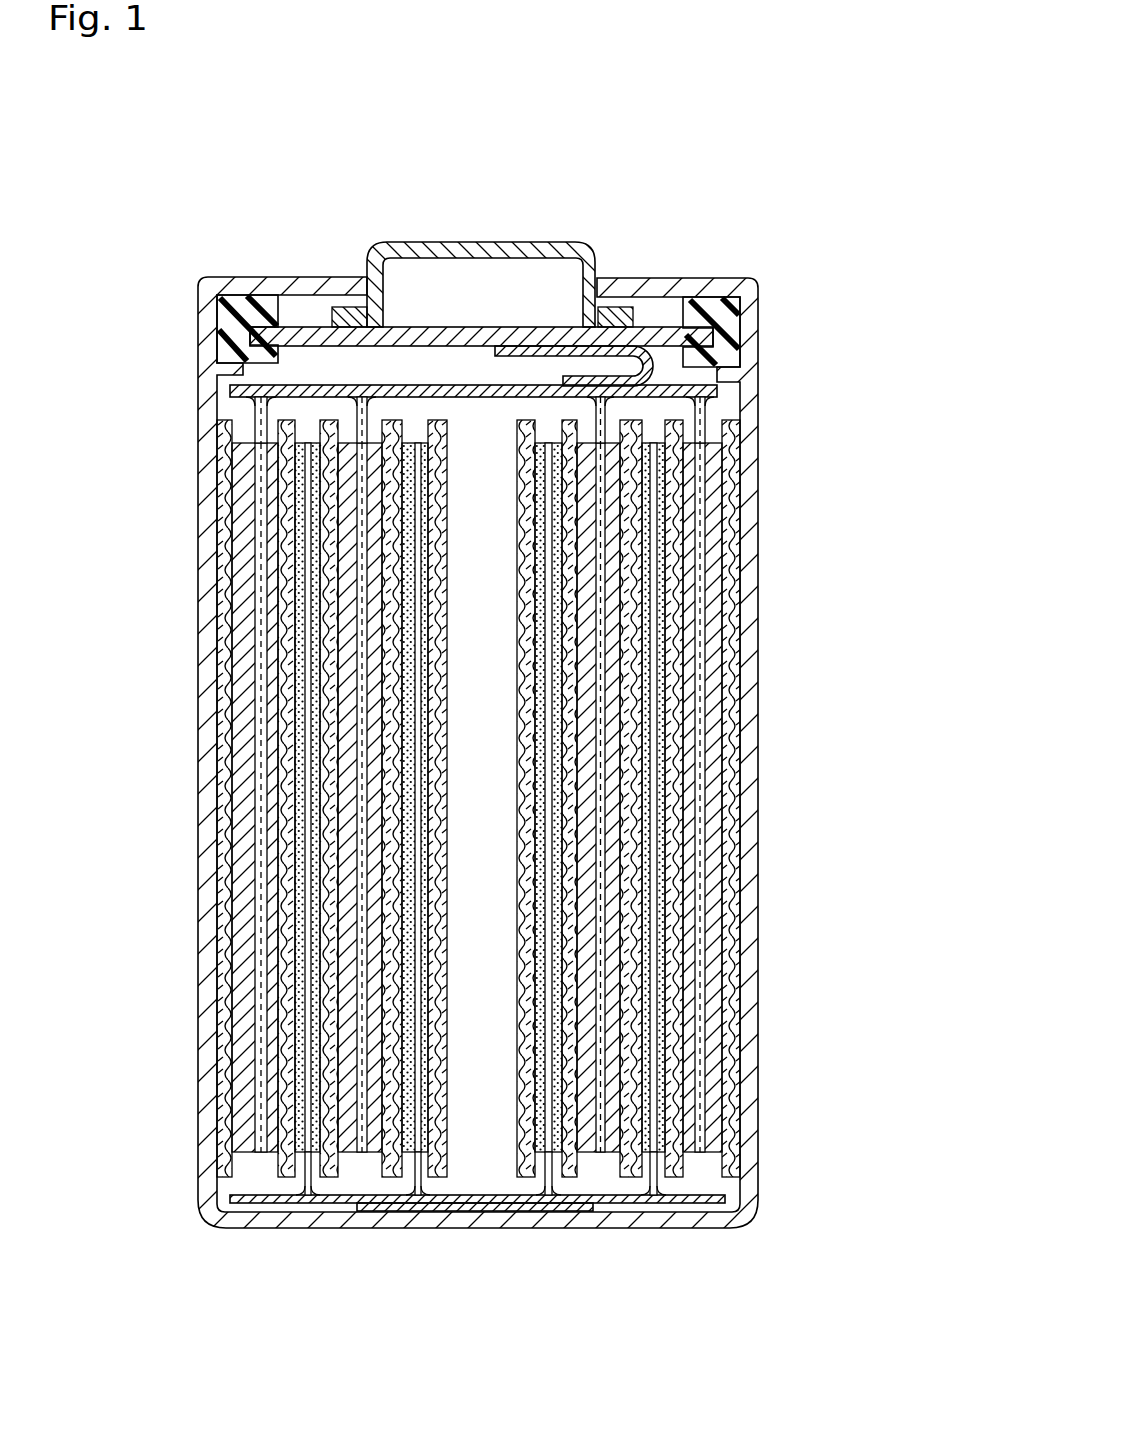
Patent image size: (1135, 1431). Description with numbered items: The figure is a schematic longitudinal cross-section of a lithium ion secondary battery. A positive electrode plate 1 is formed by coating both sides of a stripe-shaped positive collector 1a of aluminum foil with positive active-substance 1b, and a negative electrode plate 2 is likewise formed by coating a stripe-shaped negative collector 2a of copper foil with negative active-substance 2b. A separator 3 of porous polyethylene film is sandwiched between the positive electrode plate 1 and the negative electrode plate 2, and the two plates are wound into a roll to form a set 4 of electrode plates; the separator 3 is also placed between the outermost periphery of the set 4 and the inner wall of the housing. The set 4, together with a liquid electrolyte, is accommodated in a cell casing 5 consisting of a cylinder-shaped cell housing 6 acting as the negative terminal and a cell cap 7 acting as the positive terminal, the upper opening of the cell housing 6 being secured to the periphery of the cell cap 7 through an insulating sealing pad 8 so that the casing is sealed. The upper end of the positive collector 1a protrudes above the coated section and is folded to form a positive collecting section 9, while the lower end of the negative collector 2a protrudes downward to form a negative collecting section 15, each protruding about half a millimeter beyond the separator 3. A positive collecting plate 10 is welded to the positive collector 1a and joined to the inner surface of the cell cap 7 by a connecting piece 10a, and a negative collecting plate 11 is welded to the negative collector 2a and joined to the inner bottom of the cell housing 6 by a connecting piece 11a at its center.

The positive electrode plate 1 is at (547, 797).
The positive collector 1a is at (720, 682).
The positive active-substance 1b is at (813, 662).
The negative electrode plate 2 is at (579, 797).
The negative collector 2a is at (633, 978).
The negative active-substance 2b is at (650, 1038).
The separator 3 is at (700, 893).
The set of electrode plates 4 is at (573, 798).
The cell casing 5 is at (500, 189).
The cell housing 6 is at (750, 279).
The cell cap 7 is at (540, 246).
The gasket 8 is at (745, 340).
The positive collecting section 9 is at (275, 395).
The positive collecting plate 10 is at (432, 385).
The connecting piece 10a is at (598, 308).
The negative collecting plate 11 is at (533, 1203).
The connecting piece 11a is at (573, 1207).
The negative collecting section 15 is at (295, 1193).